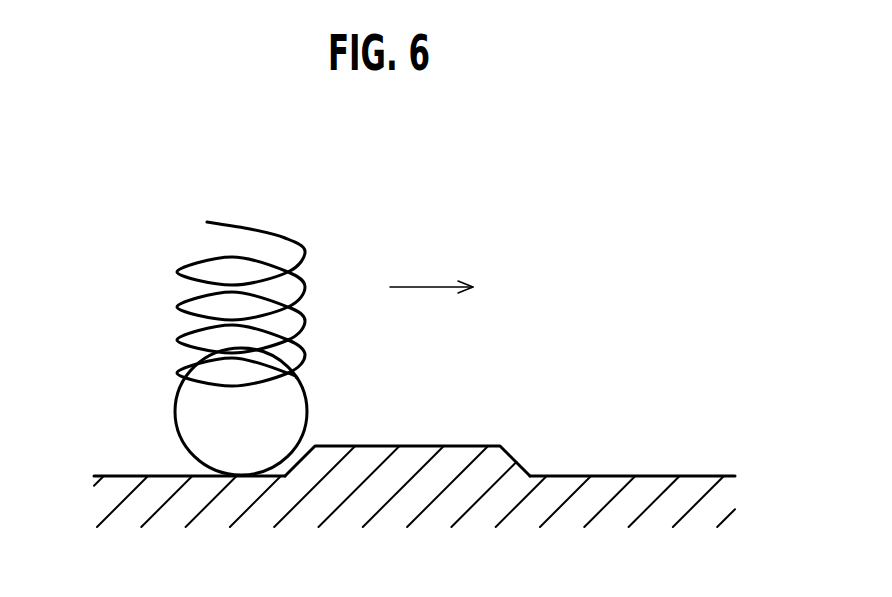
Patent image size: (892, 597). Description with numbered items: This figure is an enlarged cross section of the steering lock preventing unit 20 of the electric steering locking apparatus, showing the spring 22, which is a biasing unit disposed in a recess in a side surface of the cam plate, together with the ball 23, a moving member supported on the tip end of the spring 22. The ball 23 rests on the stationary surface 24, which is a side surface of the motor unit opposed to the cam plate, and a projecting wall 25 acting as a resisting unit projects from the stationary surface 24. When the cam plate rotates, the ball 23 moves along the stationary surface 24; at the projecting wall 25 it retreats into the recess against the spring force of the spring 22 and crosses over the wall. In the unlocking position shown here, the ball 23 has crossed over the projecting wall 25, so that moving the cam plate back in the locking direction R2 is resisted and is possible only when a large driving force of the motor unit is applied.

The steering lock preventing unit 20 is at (167, 243).
The spring 22 is at (178, 300).
The ball 23 is at (188, 417).
The stationary surface 24 is at (605, 477).
The projecting wall 25 is at (413, 457).
The locking direction R2 is at (425, 286).